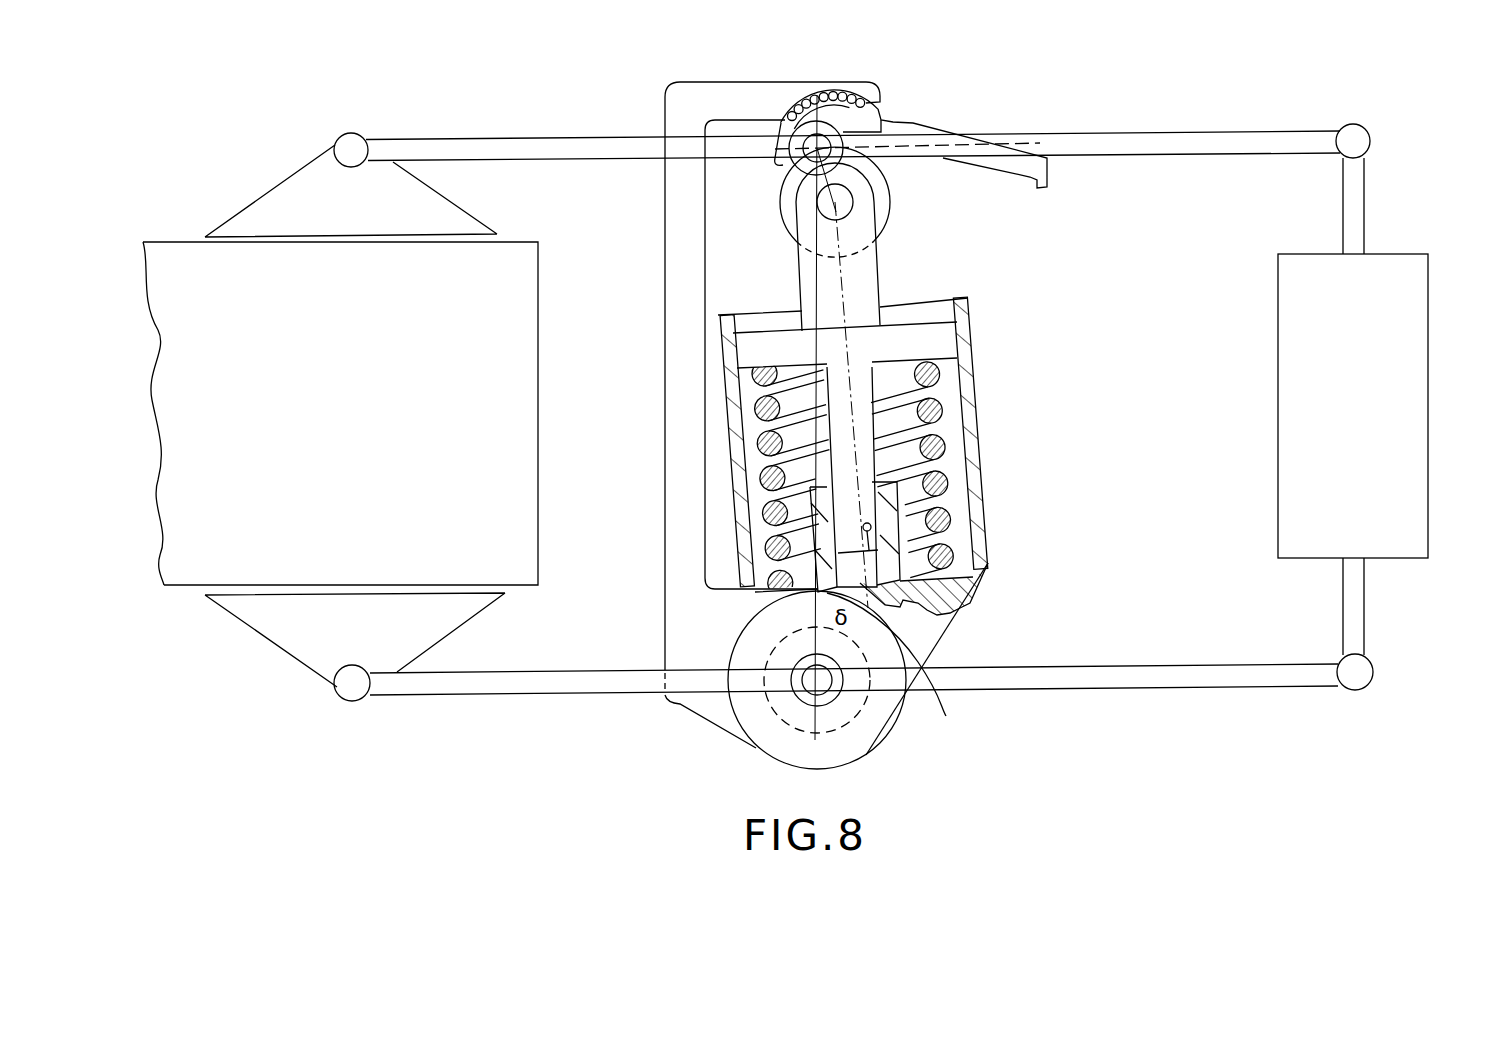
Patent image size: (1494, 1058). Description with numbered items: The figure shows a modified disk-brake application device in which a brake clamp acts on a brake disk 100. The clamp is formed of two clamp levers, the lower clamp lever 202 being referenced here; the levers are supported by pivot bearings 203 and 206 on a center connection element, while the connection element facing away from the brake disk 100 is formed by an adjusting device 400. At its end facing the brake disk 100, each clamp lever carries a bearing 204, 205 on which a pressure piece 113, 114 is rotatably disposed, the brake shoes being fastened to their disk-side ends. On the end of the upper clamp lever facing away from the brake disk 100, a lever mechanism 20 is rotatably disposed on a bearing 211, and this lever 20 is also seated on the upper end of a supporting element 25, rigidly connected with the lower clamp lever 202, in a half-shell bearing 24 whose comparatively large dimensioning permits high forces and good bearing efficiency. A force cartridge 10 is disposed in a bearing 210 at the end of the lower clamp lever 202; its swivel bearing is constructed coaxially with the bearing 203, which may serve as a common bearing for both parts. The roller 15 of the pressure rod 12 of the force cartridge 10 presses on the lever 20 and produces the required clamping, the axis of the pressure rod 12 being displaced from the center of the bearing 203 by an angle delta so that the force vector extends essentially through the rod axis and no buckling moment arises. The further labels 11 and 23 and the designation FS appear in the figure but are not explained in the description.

The force cartridge 10 is at (989, 568).
The compression spring 11 is at (945, 522).
The pressure rod 12 is at (894, 557).
The roller 15 is at (786, 234).
The lever mechanism 20 is at (908, 122).
The center line 23 is at (923, 157).
The half-shell bearing 24 is at (828, 91).
The supporting element 25 is at (665, 466).
The brake disk 100 is at (340, 392).
The pressure piece 113 is at (285, 657).
The pressure piece 114 is at (462, 208).
The lower clamp lever 202 is at (1196, 690).
The pivot bearing 203 is at (812, 692).
The bearing 204 is at (352, 701).
The bearing 205 is at (360, 134).
The pivot bearing 206 is at (812, 146).
The bearing 210 is at (1359, 690).
The bearing 211 is at (1363, 125).
The adjusting device 400 is at (1428, 432).
The spring force FS is at (980, 369).